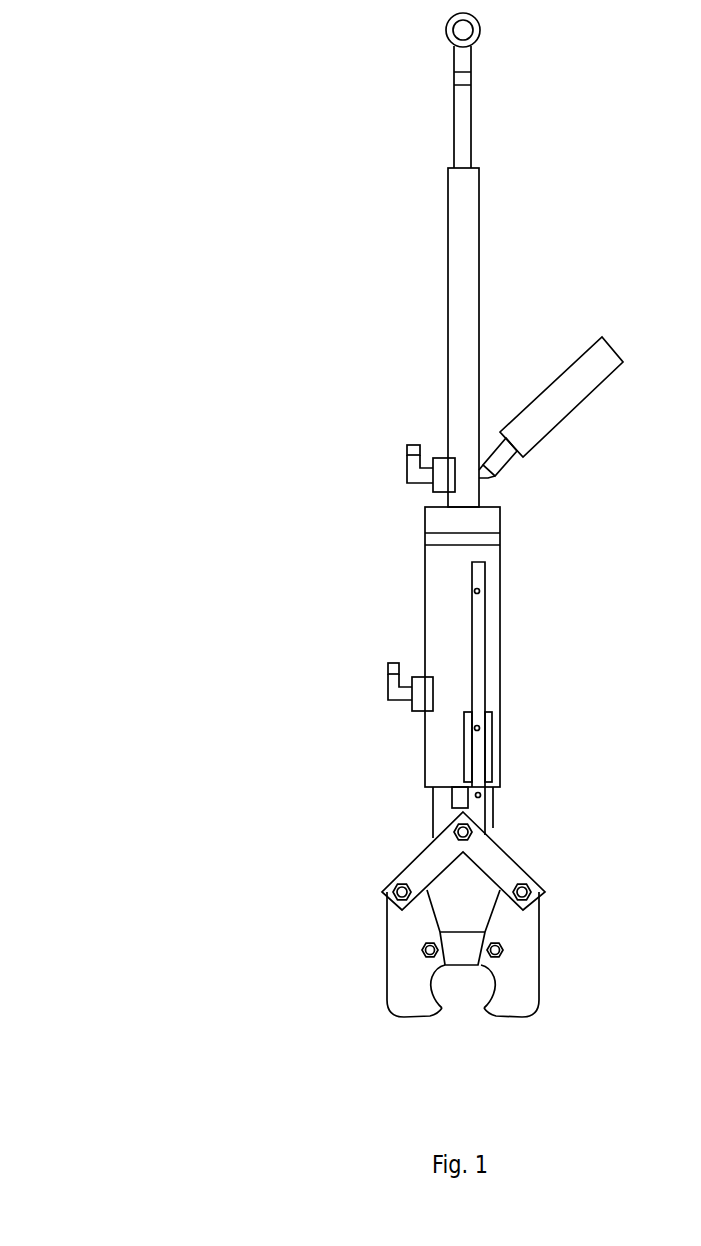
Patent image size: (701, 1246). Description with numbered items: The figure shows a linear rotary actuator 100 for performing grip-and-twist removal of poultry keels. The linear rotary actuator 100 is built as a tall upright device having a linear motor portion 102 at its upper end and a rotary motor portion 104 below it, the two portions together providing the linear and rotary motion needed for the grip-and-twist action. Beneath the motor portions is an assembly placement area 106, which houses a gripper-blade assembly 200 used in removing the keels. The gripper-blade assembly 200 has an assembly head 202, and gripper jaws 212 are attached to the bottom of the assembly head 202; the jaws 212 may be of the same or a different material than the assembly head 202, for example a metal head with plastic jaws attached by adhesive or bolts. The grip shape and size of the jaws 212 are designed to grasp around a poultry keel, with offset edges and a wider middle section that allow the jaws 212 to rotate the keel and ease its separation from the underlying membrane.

The linear rotary actuator 100 is at (168, 43).
The linear motor portion 102 is at (463, 133).
The rotary motor portion 104 is at (464, 345).
The assembly placement area 106 is at (447, 765).
The gripper-blade assembly 200 is at (337, 882).
The assembly head 202 is at (365, 972).
The gripper jaws 212 is at (434, 1016).